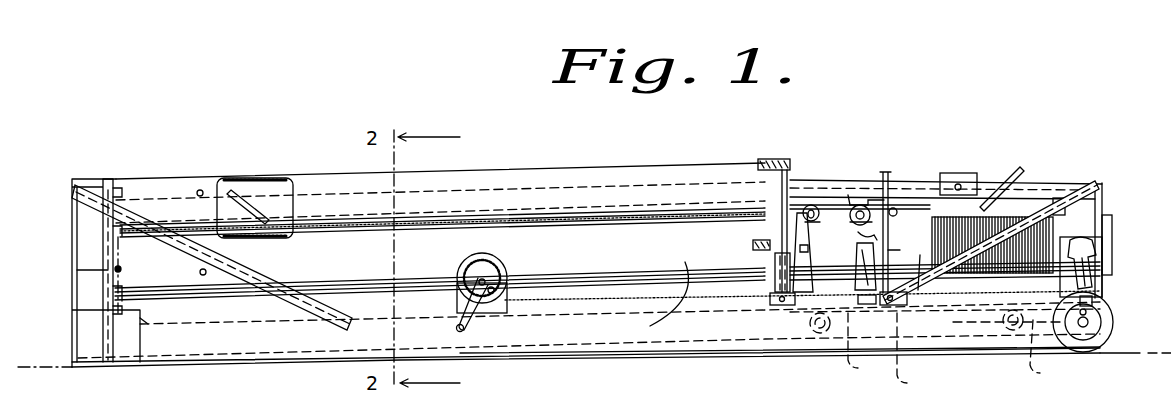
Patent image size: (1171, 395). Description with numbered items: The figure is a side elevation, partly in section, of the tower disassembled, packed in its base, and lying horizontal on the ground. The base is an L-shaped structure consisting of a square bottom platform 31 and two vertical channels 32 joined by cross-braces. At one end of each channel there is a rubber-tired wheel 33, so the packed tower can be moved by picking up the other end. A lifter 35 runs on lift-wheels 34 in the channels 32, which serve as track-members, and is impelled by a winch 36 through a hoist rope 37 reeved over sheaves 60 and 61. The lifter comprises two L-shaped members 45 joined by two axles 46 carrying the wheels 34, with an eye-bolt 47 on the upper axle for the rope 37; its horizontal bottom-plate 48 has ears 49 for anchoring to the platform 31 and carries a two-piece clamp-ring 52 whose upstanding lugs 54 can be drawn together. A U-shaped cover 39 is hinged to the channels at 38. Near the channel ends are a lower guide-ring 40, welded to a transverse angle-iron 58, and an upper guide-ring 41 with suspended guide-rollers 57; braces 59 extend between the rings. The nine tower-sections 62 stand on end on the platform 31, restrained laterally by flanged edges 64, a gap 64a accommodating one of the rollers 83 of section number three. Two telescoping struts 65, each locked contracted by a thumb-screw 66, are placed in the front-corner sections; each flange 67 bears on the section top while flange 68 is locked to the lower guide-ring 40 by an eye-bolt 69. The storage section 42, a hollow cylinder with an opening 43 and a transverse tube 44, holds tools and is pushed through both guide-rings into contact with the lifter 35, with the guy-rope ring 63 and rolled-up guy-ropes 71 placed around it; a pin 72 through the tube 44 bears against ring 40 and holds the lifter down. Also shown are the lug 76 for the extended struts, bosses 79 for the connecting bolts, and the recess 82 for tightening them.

The bottom platform 31 is at (91, 236).
The vertical channels 32 is at (228, 342).
The rubber-tired wheel 33 is at (1092, 352).
The lift-wheels 34 is at (956, 348).
The lifter 35 is at (793, 260).
The winch 36 is at (498, 264).
The hoist rope 37 is at (610, 295).
The hinge 38 is at (772, 305).
The U-shaped cover 39 is at (790, 159).
The lower guide-ring 40 is at (892, 254).
The upper guide-ring 41 is at (1104, 197).
The storage section 42 is at (918, 290).
The opening 43 is at (659, 299).
The transverse tube 44 is at (200, 190).
The L-shaped members 45 is at (945, 351).
The axles 46 is at (820, 335).
The eye-bolt 47 is at (1006, 321).
The bottom-plate 48 is at (775, 256).
The ears 49 is at (812, 228).
The clamp-ring 52 is at (848, 208).
The upstanding lugs 54 is at (812, 210).
The guide-rollers 57 is at (870, 202).
The transverse angle-iron 58 is at (903, 306).
The braces 59 is at (1030, 240).
The sheave 60 is at (1094, 301).
The sheave 61 is at (1090, 318).
The tower-sections 62 is at (635, 150).
The guy-rope ring 63 is at (1075, 240).
The flanged edges 64 is at (110, 178).
The gap 64a is at (118, 270).
The telescoping struts 65 is at (268, 200).
The thumb-screw 66 is at (958, 185).
The flange 67 is at (790, 184).
The flange 68 is at (887, 193).
The eye-bolt 69 is at (898, 211).
The guy-ropes 71 is at (1017, 213).
The pin 72 is at (880, 236).
The lug 76 is at (870, 305).
The bosses 79 is at (758, 206).
The recess 82 is at (123, 195).
The rollers 83 is at (124, 270).